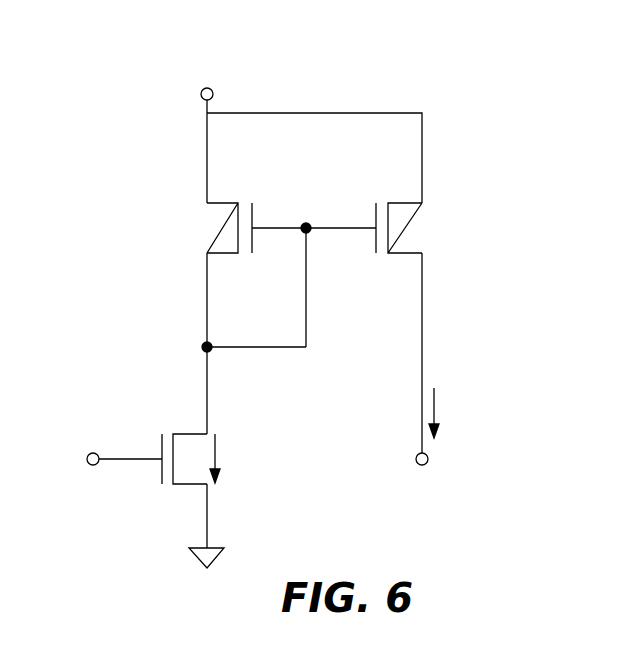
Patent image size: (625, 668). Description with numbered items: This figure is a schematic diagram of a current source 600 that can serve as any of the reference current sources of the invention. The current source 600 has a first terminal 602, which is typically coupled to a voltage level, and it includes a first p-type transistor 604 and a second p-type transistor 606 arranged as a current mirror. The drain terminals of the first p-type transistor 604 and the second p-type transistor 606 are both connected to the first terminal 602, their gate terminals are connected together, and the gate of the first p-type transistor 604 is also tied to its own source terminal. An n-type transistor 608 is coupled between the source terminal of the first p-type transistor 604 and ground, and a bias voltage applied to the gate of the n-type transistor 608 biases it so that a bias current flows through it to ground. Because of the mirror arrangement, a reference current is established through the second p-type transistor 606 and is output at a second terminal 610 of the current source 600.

The current source 600 is at (355, 82).
The first terminal 602 is at (203, 93).
The first p-type transistor 604 is at (208, 222).
The second p-type transistor 606 is at (415, 238).
The n-type transistor 608 is at (158, 450).
The second terminal 610 is at (428, 460).